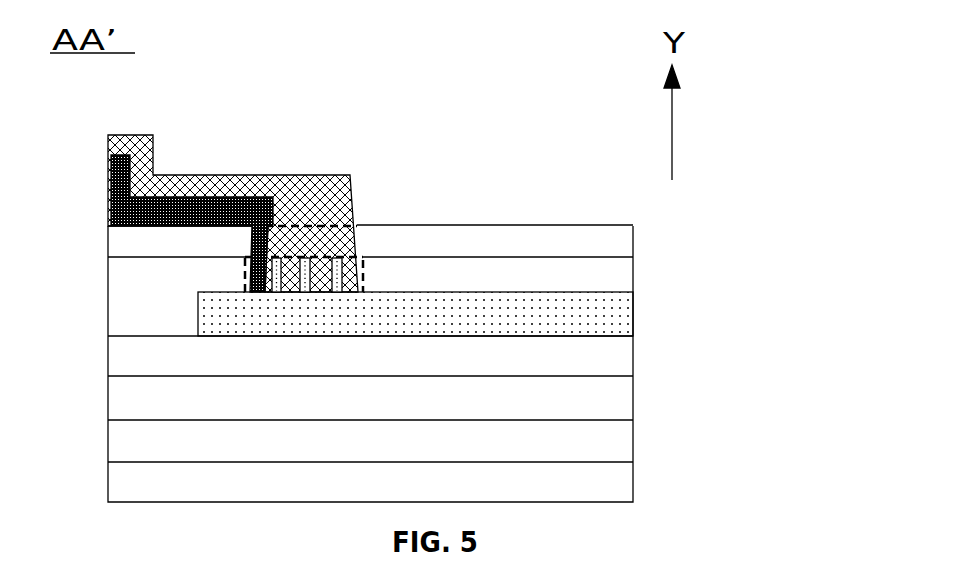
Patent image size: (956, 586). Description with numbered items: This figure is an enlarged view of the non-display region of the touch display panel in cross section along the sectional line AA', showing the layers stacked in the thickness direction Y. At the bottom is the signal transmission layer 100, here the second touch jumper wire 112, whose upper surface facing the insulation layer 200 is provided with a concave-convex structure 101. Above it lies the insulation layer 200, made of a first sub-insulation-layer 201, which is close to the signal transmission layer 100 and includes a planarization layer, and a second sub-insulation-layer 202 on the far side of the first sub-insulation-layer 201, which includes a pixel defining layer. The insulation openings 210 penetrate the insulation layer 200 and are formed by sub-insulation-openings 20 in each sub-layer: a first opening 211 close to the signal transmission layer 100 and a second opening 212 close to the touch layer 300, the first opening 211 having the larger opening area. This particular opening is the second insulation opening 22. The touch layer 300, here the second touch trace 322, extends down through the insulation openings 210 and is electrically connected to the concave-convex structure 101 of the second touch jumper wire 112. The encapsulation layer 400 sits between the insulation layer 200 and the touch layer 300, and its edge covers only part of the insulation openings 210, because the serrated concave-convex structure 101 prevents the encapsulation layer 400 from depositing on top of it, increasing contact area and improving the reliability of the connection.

The encapsulation layer 400 is at (103, 155).
The second insulation opening 22 is at (557, 135).
The insulation openings 210 is at (378, 57).
The first opening 211 is at (365, 272).
The second opening 212 is at (357, 237).
The touch layer 300 is at (332, 213).
The second touch trace 322 is at (350, 182).
The sub-insulation-openings 20 is at (387, 260).
The second sub-insulation-layer 202 is at (633, 228).
The first sub-insulation-layer 201 is at (633, 278).
The insulation layer 200 is at (483, 255).
The signal transmission layer 100 is at (520, 317).
The second touch jumper wire 112 is at (633, 320).
The concave-convex structure 101 is at (177, 276).